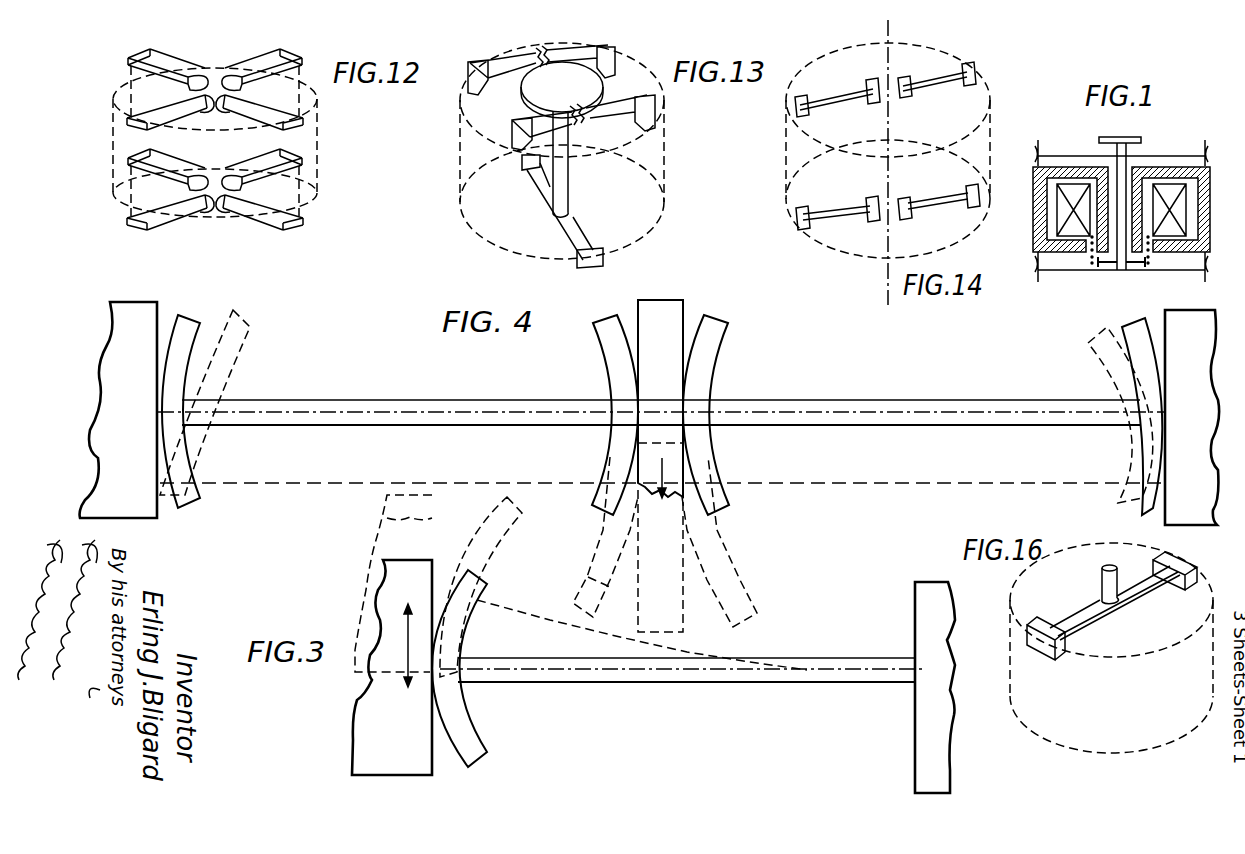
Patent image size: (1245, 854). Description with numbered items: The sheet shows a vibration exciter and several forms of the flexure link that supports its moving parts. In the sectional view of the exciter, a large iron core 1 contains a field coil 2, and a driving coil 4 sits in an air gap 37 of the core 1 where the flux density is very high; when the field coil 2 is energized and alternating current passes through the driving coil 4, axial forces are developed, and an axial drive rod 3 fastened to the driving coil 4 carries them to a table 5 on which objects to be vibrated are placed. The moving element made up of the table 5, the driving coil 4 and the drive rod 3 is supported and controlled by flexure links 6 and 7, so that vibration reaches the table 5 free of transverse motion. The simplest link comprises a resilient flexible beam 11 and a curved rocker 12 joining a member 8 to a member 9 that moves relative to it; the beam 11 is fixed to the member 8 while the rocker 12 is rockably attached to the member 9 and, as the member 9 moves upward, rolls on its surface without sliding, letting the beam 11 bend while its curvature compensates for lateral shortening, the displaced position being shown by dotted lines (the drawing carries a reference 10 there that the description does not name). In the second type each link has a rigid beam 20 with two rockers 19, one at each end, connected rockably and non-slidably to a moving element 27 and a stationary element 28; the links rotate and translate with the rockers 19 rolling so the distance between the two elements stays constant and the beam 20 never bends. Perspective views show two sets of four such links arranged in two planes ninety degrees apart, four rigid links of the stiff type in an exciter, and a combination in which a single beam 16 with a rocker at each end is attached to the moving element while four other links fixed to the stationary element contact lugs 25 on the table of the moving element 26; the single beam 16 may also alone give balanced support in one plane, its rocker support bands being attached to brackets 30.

In FIG. 1, the iron core 1 is at (1202, 188).
In FIG. 1, the field coil 2 is at (1182, 217).
In FIG. 1, the axial drive rod 3 is at (1128, 149).
In FIG. 1, the driving coil 4 is at (1152, 258).
In FIG. 1, the table 5 is at (1105, 138).
In FIG. 1, the flexure link 6 is at (1160, 156).
In FIG. 1, the flexure link 7 is at (1088, 272).
In FIG. 3, the member 8 is at (942, 645).
In FIG. 3, the member 9 is at (393, 607).
In FIG. 3, the displaced position of shaft 10 is at (683, 651).
In FIG. 3, the resilient flexible beam 11 is at (777, 660).
In FIG. 3, the curved rocker 12 is at (463, 610).
In FIG. 16, the single beam 16 is at (1132, 596).
In FIG. 4, the rockers 19 is at (245, 328).
In FIG. 4, the rigid beam 20 is at (307, 402).
In FIG. 13, the lugs 25 is at (542, 50).
In FIG. 13, the moving element 26 is at (590, 92).
In FIG. 4, the moving element 27 is at (668, 315).
In FIG. 4, the stationary element 28 is at (108, 330).
In FIG. 16, the brackets 30 is at (1180, 575).
In FIG. 1, the air gap 37 is at (1150, 262).